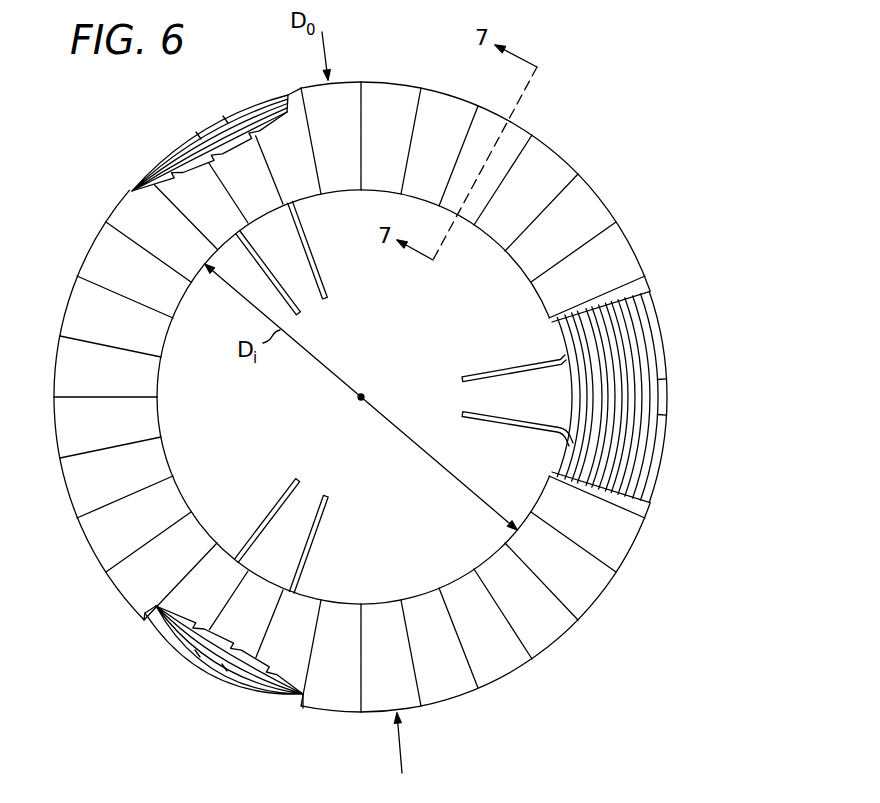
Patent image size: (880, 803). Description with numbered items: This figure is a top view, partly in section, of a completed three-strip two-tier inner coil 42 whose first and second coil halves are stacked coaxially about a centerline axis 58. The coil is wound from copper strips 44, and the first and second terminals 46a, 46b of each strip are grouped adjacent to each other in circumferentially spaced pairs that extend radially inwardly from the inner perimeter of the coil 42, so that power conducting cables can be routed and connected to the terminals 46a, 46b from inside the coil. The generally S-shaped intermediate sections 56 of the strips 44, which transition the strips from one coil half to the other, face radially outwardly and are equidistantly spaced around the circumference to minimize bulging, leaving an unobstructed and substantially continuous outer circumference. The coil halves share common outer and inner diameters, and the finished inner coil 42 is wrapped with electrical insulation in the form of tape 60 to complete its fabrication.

The inner coil 42 is at (655, 243).
The strips 44 is at (652, 351).
The first terminal 46a is at (323, 301).
The second terminal 46b is at (300, 236).
The intermediate section 56 is at (212, 123).
The centerline axis 58 is at (355, 398).
The tape 60 is at (584, 177).